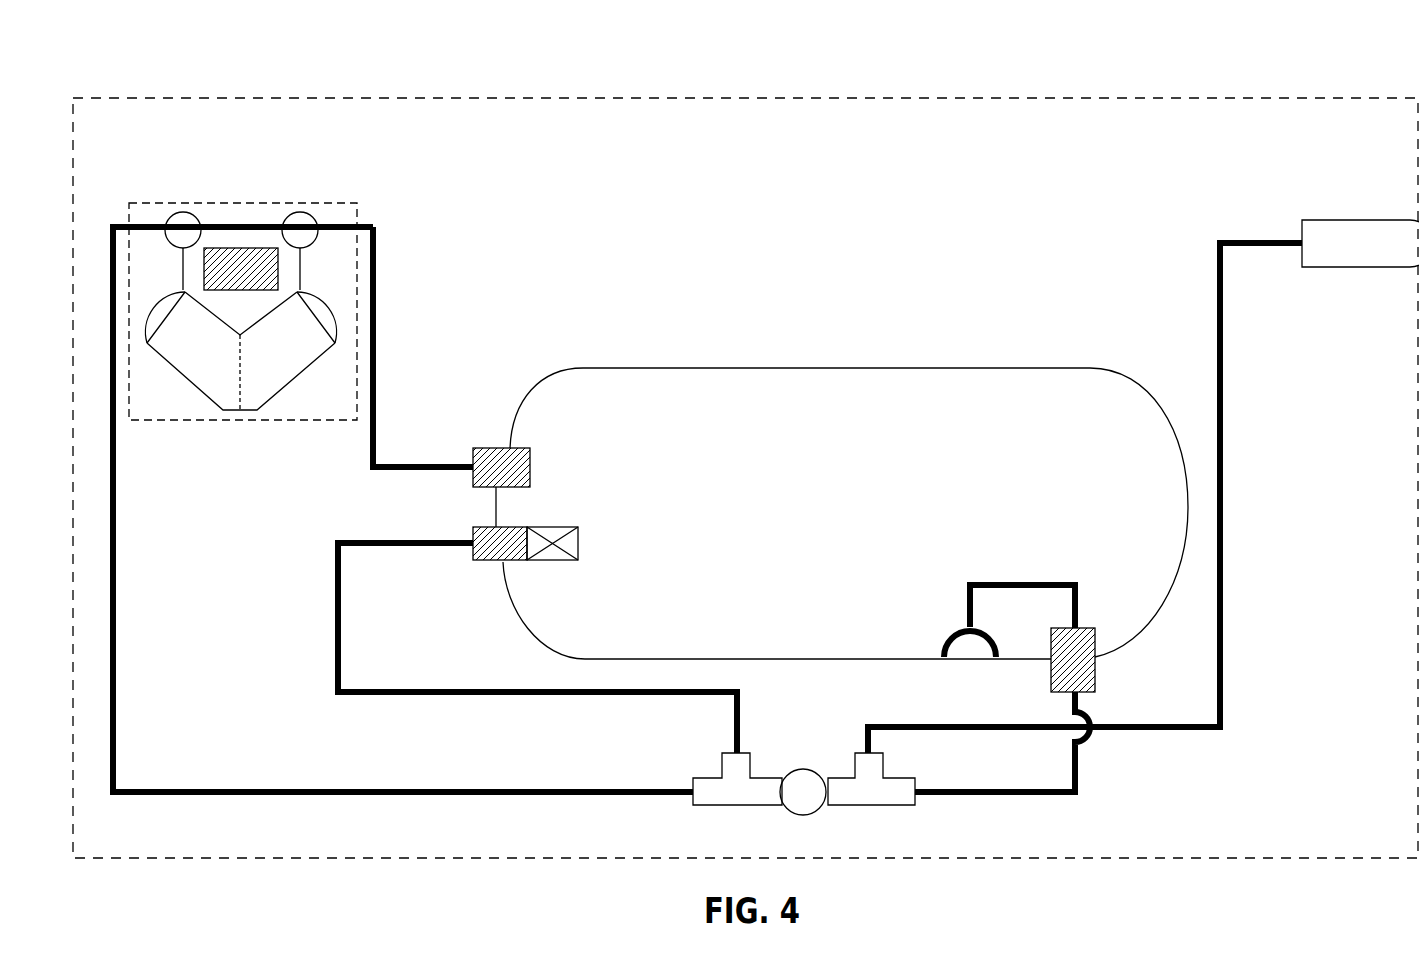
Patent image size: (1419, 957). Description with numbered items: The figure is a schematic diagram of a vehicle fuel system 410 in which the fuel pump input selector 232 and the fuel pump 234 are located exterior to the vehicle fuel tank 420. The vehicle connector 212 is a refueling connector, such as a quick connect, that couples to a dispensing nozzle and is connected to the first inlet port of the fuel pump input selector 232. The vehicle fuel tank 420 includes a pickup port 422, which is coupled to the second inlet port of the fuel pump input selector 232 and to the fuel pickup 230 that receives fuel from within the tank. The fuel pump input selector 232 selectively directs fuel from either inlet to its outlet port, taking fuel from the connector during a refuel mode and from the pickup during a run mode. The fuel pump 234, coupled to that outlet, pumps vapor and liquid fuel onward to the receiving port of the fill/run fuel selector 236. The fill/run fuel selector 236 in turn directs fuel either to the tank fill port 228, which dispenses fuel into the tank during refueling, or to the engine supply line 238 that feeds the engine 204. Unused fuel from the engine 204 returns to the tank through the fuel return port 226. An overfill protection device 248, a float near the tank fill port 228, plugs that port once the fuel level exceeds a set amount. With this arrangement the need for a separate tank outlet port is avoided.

The vehicle fuel system 410 is at (648, 98).
The engine 204 is at (340, 203).
The vehicle connector 212 is at (1328, 220).
The vehicle fuel tank 420 is at (668, 368).
The fuel return port 226 is at (490, 448).
The tank fill port 228 is at (480, 562).
The overfill protection device 248 is at (578, 527).
The engine supply line 238 is at (116, 510).
The fuel pickup 230 is at (947, 640).
The pickup port 422 is at (1095, 670).
The fill/run fuel selector 236 is at (722, 765).
The fuel pump 234 is at (805, 769).
The fuel pump input selector 232 is at (890, 770).